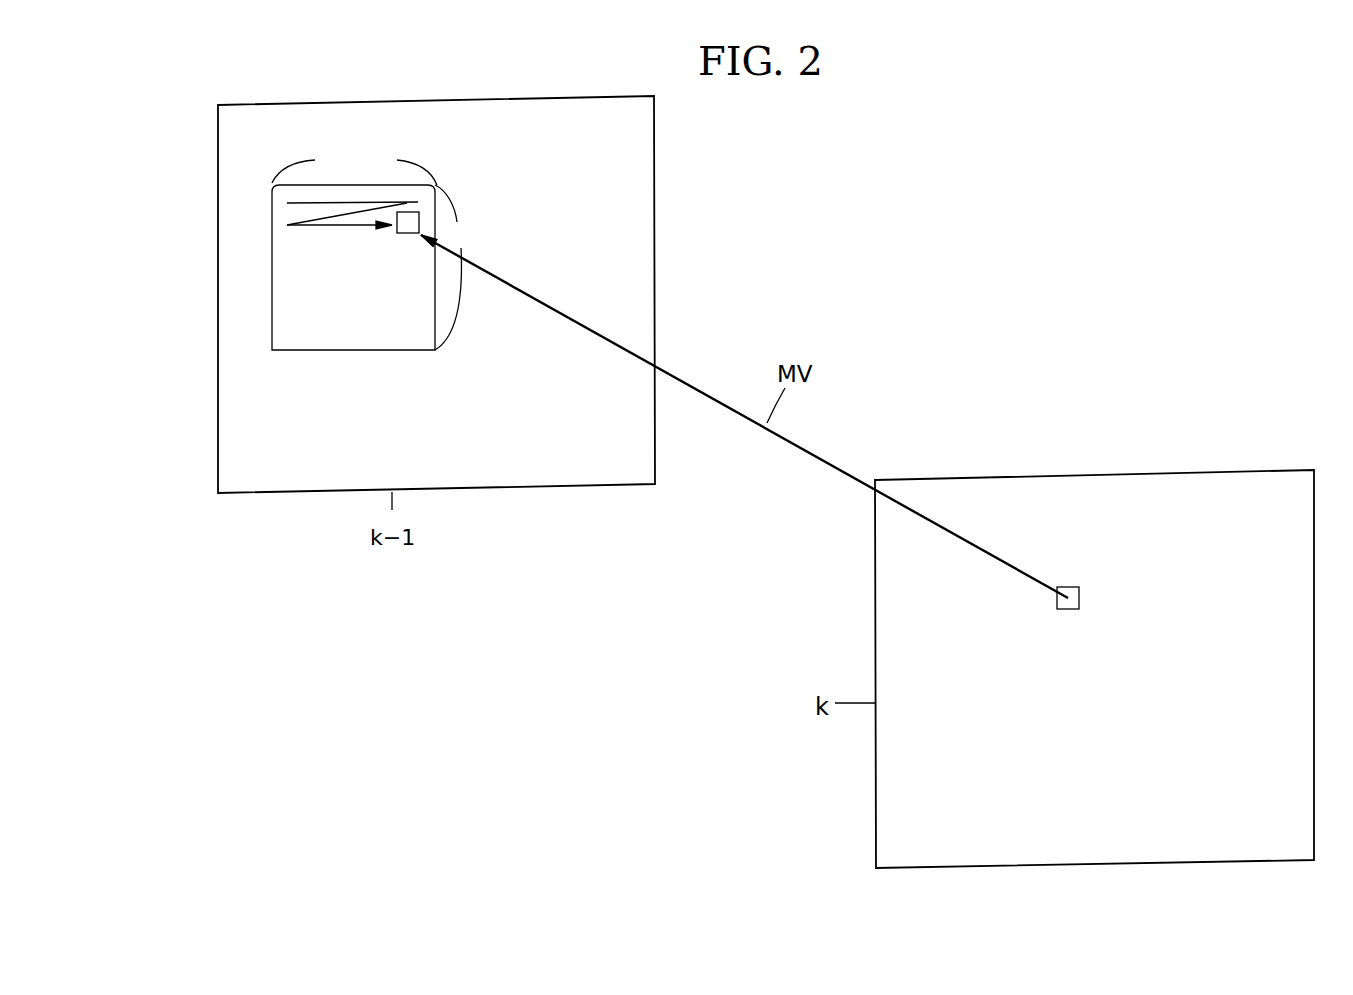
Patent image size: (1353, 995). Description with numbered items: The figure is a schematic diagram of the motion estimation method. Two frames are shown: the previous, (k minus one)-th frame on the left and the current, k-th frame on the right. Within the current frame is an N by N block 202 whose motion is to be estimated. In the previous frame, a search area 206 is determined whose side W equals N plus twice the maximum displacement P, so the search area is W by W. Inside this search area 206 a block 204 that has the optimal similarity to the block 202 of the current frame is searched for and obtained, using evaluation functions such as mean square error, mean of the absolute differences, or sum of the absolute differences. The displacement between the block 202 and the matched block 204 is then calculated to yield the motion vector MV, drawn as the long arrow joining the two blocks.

The block 202 is at (1067, 610).
The block 204 is at (419, 224).
The search area 206 is at (360, 352).